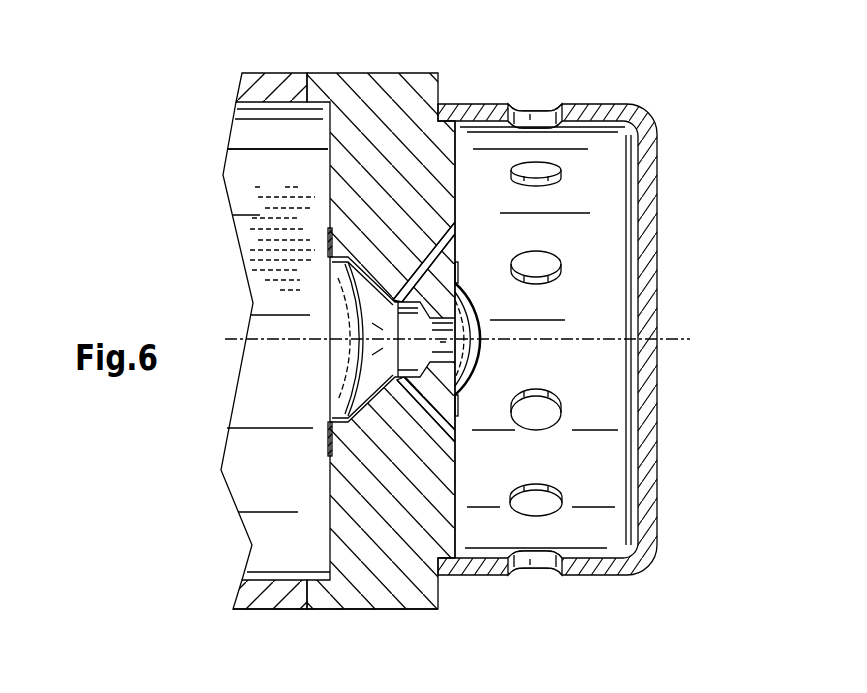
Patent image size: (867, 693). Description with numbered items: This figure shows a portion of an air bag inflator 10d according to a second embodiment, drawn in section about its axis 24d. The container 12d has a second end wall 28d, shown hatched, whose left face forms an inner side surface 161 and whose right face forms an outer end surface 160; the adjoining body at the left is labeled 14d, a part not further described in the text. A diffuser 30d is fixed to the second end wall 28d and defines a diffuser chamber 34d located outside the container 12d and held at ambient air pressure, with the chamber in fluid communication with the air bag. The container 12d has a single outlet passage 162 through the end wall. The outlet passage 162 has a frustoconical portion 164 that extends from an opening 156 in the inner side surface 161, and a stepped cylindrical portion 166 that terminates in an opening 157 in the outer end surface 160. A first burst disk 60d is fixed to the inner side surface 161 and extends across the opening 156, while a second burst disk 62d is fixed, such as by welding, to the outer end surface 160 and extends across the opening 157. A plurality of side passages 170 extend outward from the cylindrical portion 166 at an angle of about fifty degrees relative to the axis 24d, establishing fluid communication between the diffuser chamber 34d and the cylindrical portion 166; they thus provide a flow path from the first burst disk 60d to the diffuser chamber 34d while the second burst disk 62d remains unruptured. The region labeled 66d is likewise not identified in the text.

The inflator 10d is at (252, 638).
The container 12d is at (270, 68).
The window body 14d is at (273, 136).
The inner side surface 161 is at (330, 178).
The frit region 66d is at (272, 231).
The first burst disk 60d is at (338, 302).
The opening 156 is at (330, 384).
The frustoconical portion 164 is at (373, 382).
The outlet passage 162 is at (370, 262).
The second end wall 28d is at (388, 613).
The diffuser 30d is at (648, 113).
The diffuser chamber 34d is at (600, 243).
The side passages 170 is at (457, 226).
The opening 157 is at (466, 305).
The second burst disk 62d is at (490, 327).
The cylindrical portion 166 is at (443, 351).
The axis 24d is at (683, 340).
The outer end surface 160 is at (455, 515).